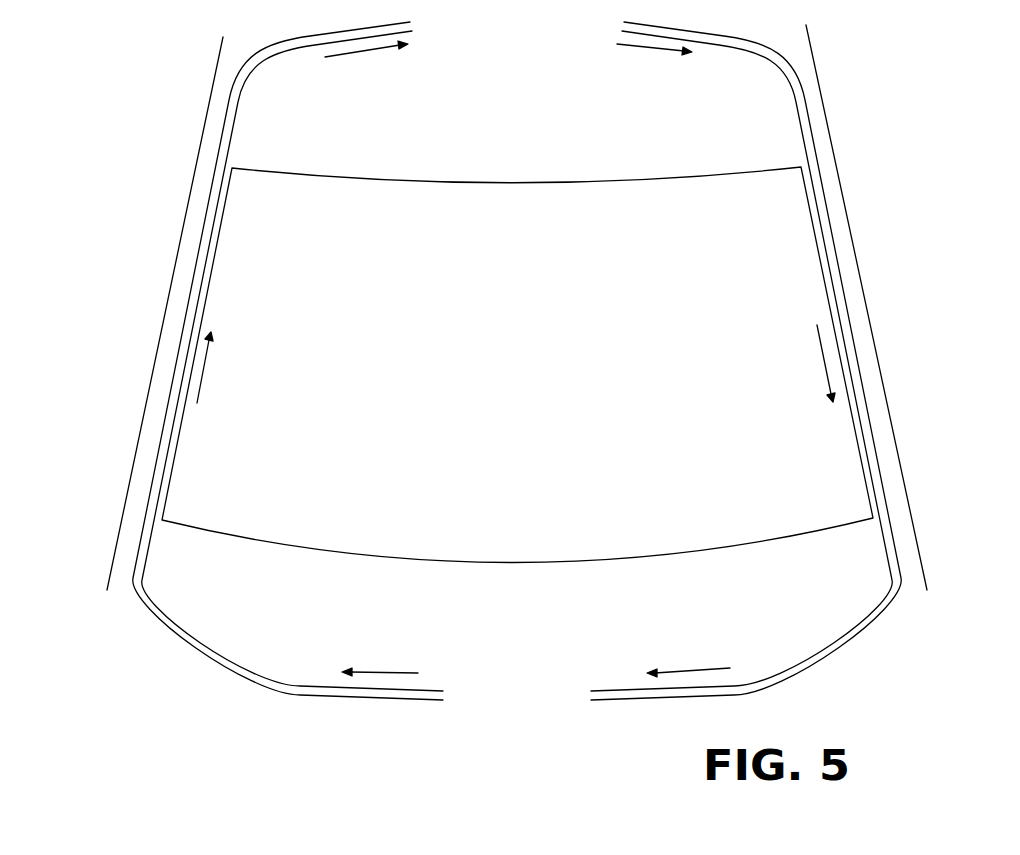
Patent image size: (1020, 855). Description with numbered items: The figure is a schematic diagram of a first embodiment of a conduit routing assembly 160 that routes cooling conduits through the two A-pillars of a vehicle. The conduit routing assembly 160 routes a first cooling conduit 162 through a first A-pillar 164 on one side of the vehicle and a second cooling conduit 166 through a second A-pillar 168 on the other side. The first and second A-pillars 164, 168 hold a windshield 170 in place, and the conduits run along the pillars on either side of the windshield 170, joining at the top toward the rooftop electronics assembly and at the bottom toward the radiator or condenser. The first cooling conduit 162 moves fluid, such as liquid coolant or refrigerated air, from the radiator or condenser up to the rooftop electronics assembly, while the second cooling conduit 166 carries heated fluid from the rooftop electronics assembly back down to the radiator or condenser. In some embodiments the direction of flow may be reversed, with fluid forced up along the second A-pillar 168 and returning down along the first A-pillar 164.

The conduit routing assembly 160 is at (132, 123).
The first cooling conduit 162 is at (162, 397).
The first A-pillar 164 is at (163, 322).
The second cooling conduit 166 is at (865, 360).
The second A-pillar 168 is at (866, 287).
The windshield 170 is at (487, 183).